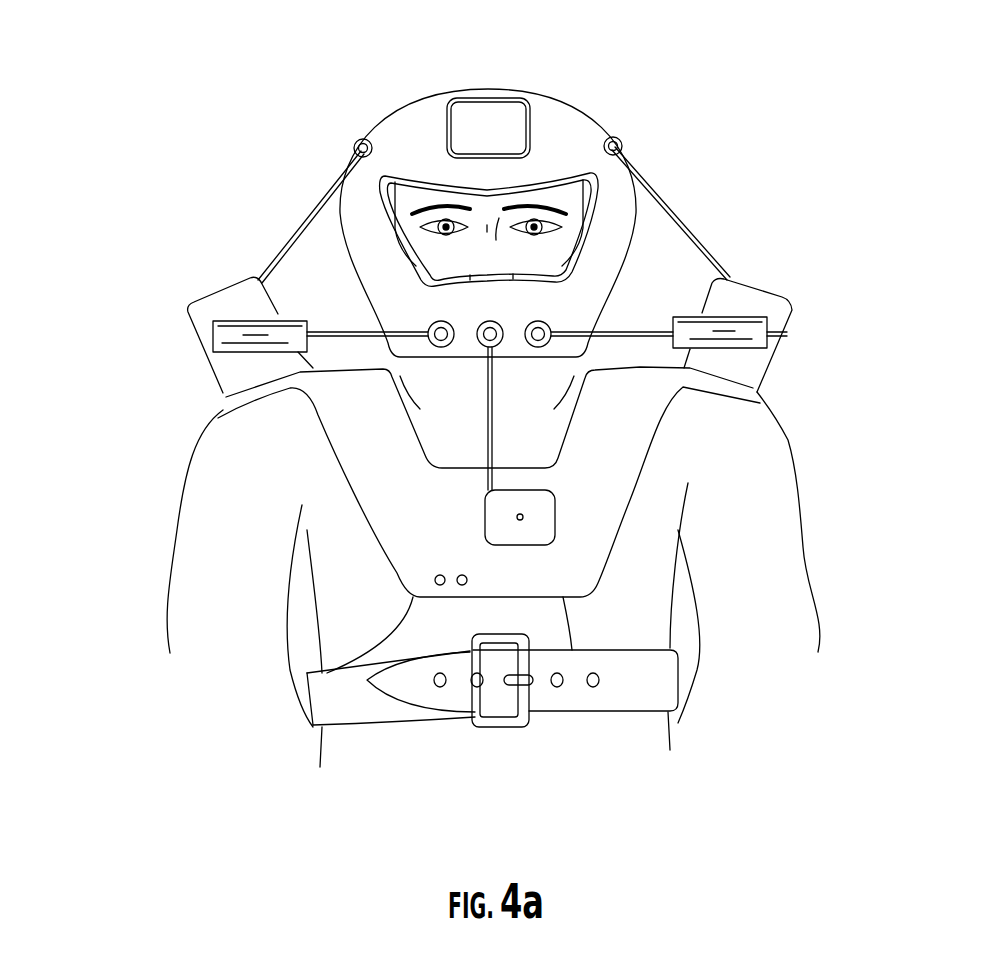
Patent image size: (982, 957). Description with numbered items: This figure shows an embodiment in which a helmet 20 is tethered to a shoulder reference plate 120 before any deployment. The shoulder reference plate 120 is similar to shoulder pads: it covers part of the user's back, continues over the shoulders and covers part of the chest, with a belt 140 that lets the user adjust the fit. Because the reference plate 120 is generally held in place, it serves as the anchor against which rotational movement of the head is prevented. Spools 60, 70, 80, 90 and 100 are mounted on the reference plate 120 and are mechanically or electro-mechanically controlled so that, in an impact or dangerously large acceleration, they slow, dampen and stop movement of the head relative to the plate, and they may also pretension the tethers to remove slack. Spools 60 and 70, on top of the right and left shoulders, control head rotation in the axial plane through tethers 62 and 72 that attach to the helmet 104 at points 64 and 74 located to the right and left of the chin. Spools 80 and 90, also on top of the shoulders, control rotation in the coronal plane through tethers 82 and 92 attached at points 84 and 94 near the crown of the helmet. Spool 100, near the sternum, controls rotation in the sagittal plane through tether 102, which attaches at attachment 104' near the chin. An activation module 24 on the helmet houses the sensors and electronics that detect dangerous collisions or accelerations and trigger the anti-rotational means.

The helmet 20 is at (552, 114).
The activation module 24 is at (460, 132).
The spool 60 is at (222, 337).
The tether 62 is at (333, 330).
The attachment point 64 is at (432, 326).
The spool 70 is at (786, 334).
The tether 72 is at (637, 328).
The attachment point 74 is at (540, 322).
The spool 80 is at (211, 313).
The tether 82 is at (300, 227).
The attachment 84 is at (350, 160).
The spool 90 is at (747, 293).
The tether 92 is at (677, 218).
The attachment 94 is at (621, 147).
The spool 100 is at (543, 537).
The tether 102 is at (487, 428).
The helmet 104 is at (489, 208).
The attachment 104' is at (557, 383).
The shoulder reference plate 120 is at (345, 456).
The belt 140 is at (632, 687).